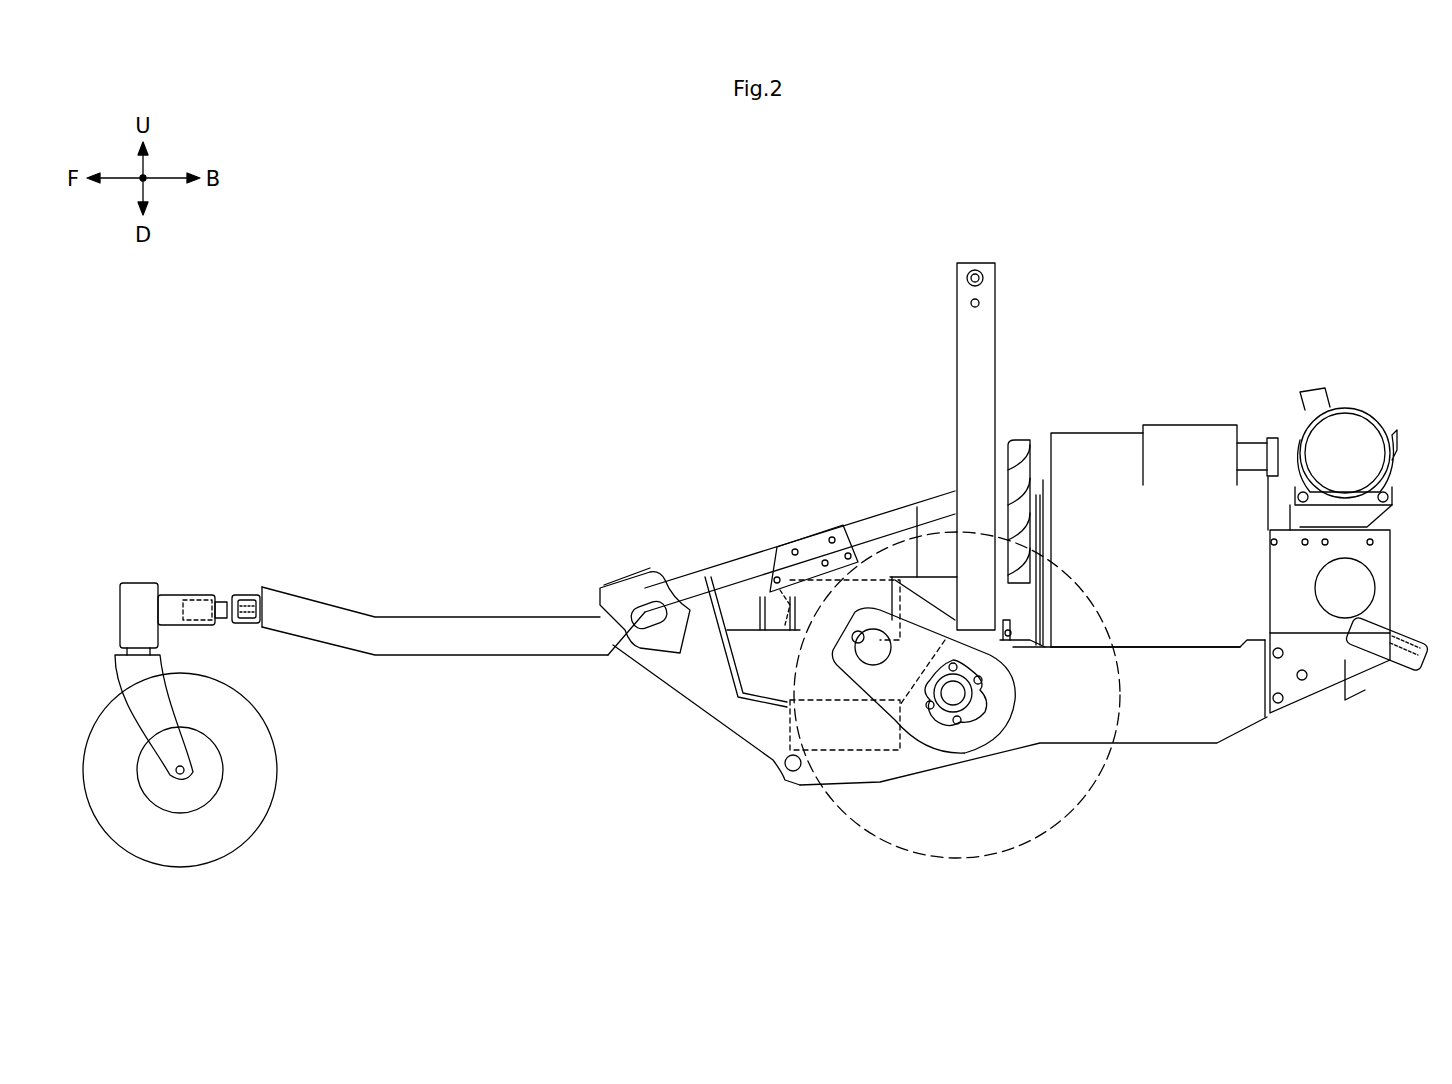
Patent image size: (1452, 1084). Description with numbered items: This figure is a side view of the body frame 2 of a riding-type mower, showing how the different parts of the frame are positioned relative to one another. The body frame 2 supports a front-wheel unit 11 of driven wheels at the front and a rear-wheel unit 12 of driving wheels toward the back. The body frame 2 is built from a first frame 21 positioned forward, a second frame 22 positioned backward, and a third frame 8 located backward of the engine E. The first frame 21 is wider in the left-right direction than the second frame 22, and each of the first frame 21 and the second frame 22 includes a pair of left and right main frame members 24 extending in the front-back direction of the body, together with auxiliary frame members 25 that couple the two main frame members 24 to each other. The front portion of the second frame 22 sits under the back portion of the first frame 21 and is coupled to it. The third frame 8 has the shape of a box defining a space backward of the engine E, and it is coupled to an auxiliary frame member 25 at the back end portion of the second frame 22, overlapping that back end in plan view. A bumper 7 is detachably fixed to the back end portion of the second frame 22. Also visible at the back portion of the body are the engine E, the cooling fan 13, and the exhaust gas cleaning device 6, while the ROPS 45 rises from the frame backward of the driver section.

The body frame 2 is at (459, 358).
The front-wheel unit 11 is at (220, 840).
The rear-wheel unit 12 is at (1050, 832).
The cooling fan 13 is at (1022, 442).
The first frame 21 is at (588, 638).
The second frame 22 is at (1033, 665).
The main frame member 24 is at (458, 642).
The auxiliary frame member 25 is at (246, 590).
The ROPS 45 is at (972, 405).
The exhaust gas cleaning device 6 is at (1350, 428).
The bumper 7 is at (1418, 660).
The third frame 8 is at (1392, 597).
The engine E is at (1125, 453).